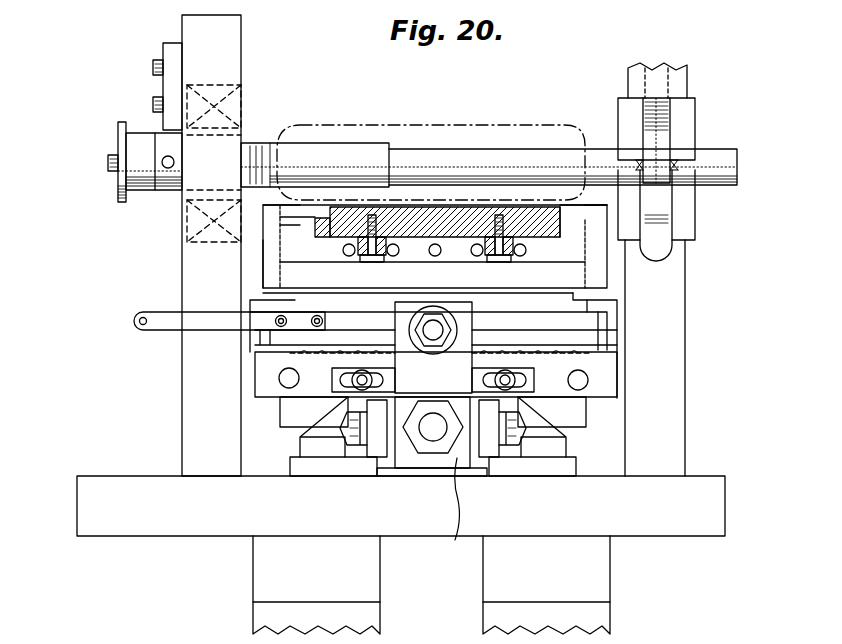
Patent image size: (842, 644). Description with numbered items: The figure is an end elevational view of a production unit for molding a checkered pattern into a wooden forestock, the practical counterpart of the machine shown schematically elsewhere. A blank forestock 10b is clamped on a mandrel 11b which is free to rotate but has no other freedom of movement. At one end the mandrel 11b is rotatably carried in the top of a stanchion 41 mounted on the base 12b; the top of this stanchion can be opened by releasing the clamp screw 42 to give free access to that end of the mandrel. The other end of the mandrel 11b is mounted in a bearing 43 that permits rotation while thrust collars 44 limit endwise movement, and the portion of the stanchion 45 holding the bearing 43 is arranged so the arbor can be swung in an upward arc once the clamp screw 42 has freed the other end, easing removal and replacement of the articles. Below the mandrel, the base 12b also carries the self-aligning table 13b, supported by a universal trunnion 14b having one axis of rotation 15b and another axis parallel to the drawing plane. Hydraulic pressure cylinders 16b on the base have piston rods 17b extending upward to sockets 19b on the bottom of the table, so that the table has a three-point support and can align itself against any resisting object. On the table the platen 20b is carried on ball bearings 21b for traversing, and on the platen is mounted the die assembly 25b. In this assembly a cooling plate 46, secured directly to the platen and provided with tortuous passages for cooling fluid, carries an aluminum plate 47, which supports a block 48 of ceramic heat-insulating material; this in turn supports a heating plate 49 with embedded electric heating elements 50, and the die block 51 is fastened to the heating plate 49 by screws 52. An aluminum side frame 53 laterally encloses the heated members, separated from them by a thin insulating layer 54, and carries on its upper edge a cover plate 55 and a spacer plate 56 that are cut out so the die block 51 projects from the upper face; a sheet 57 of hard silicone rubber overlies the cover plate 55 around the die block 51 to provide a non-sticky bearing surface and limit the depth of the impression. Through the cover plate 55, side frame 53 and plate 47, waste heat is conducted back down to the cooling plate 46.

The blank forestock 10b is at (415, 130).
The mandrel 11b is at (272, 142).
The base 12b is at (80, 503).
The table 13b is at (275, 381).
The universal trunnion 14b is at (451, 512).
The axis of rotation 15b is at (362, 460).
The hydraulic pressure cylinders 16b is at (253, 577).
The piston rods 17b is at (300, 434).
The sockets 19b is at (282, 414).
The platen 20b is at (270, 335).
The ball bearings 21b is at (290, 354).
The die assembly 25b is at (265, 258).
The stanchion 41 is at (678, 450).
The clamp screw 42 is at (668, 114).
The bearing 43 is at (185, 207).
The thrust collars 44 is at (163, 142).
The stanchion 45 is at (182, 445).
The cooling plate 46 is at (575, 299).
The aluminum plate 47 is at (597, 291).
The insulating block 48 is at (570, 270).
The heating plate 49 is at (612, 250).
The electric heating elements 50 is at (349, 256).
The die block 51 is at (565, 232).
The screws 52 is at (372, 262).
The side frame 53 is at (265, 247).
The insulating layer 54 is at (265, 279).
The cover plate 55 is at (275, 210).
The spacer plate 56 is at (297, 230).
The silicone rubber sheet 57 is at (590, 205).